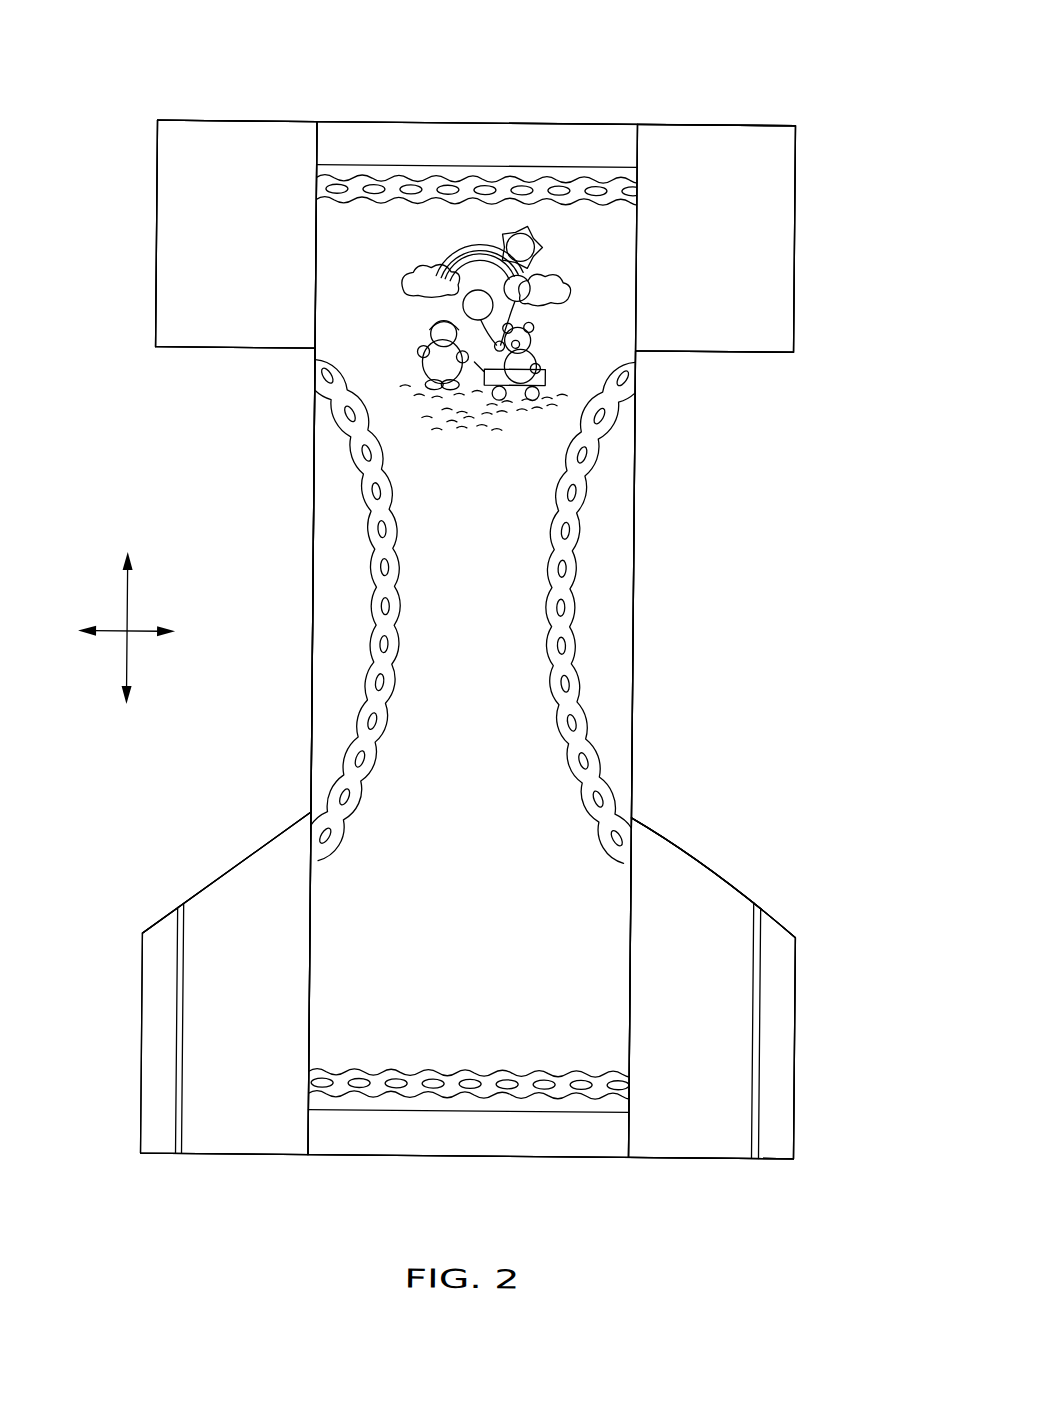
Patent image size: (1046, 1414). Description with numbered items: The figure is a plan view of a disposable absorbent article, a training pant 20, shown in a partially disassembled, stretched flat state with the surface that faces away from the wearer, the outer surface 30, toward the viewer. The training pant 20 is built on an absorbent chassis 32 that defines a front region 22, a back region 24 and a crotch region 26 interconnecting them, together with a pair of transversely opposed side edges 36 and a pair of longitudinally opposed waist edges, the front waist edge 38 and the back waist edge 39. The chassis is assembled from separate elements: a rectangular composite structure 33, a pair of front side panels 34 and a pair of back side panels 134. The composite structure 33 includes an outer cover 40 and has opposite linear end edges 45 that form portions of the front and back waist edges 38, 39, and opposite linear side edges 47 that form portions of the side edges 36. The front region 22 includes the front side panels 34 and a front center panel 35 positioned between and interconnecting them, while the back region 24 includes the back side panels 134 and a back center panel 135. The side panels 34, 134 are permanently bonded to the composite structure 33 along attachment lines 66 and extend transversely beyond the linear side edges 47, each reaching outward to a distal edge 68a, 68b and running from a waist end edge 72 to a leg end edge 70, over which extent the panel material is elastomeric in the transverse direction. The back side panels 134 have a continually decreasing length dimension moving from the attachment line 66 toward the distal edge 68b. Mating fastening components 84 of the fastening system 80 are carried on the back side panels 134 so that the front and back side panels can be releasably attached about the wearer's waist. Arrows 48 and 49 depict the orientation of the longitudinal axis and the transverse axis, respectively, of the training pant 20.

The training pant 20 is at (226, 112).
The front region 22 is at (815, 318).
The back region 24 is at (330, 962).
The crotch region 26 is at (528, 552).
The outer surface 30 is at (618, 667).
The absorbent chassis 32 is at (562, 806).
The composite structure 33 is at (313, 748).
The front side panels 34 is at (254, 213).
The front center panel 35 is at (500, 113).
The side edges 36 is at (312, 556).
The front waist edge 38 is at (427, 123).
The back waist edge 39 is at (345, 1158).
The outer cover 40 is at (363, 375).
The linear end edges 45 is at (612, 123).
The linear side edges 47 is at (312, 605).
The longitudinal axis arrow 48 is at (127, 600).
The transverse axis arrow 49 is at (112, 636).
The attachment lines 66 is at (312, 262).
The distal edge 68a is at (153, 273).
The distal edge 68b is at (145, 1080).
The leg end edge 70 is at (238, 350).
The waist end edge 72 is at (277, 123).
The fastening system 80 is at (810, 1058).
The mating fastening components 84 is at (175, 995).
The back side panels 134 is at (203, 920).
The back center panel 135 is at (450, 1030).